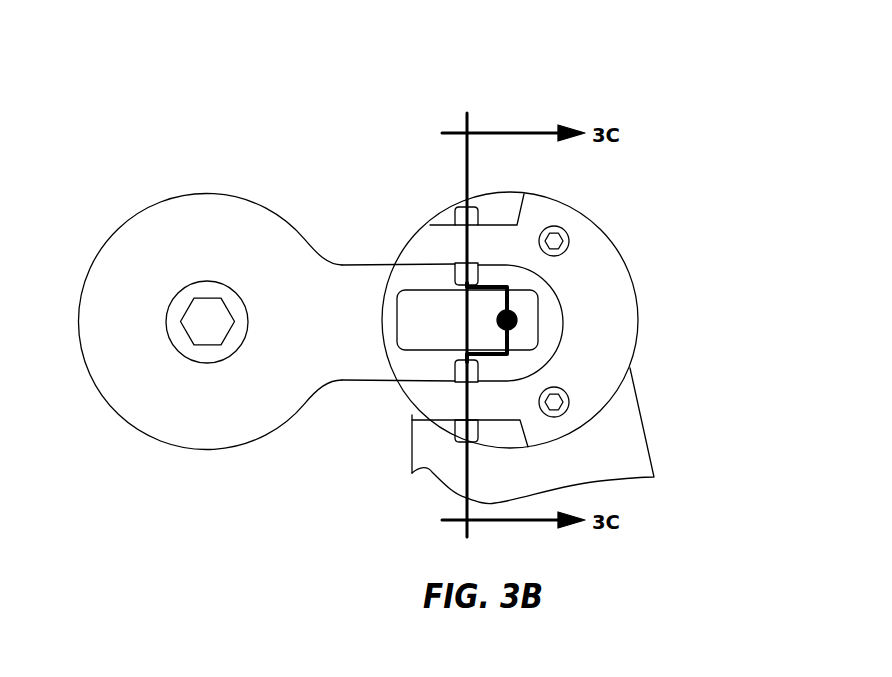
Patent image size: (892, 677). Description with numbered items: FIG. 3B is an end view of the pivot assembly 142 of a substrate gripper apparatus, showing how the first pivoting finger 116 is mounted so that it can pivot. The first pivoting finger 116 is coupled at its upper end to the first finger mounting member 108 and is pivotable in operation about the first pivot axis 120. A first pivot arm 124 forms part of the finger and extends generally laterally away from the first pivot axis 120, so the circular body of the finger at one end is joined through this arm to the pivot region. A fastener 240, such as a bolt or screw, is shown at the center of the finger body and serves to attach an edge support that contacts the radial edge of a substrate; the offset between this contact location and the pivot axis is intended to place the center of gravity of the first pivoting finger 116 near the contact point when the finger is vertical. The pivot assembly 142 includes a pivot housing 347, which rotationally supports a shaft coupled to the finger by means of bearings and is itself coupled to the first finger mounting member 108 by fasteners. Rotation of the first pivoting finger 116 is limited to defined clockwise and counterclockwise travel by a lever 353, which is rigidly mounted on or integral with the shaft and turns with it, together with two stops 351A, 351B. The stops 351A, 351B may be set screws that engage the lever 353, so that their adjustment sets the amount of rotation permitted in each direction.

The first pivoting finger 116 is at (137, 204).
The fastener 240 is at (173, 348).
The first pivot arm 124 is at (358, 303).
The lever 353 is at (427, 320).
The stop 351A is at (458, 276).
The stop 351B is at (457, 368).
The first pivot axis 120 is at (513, 310).
The pivot assembly 142 is at (615, 229).
The pivot housing 347 is at (635, 293).
The first finger mounting member 108 is at (643, 427).